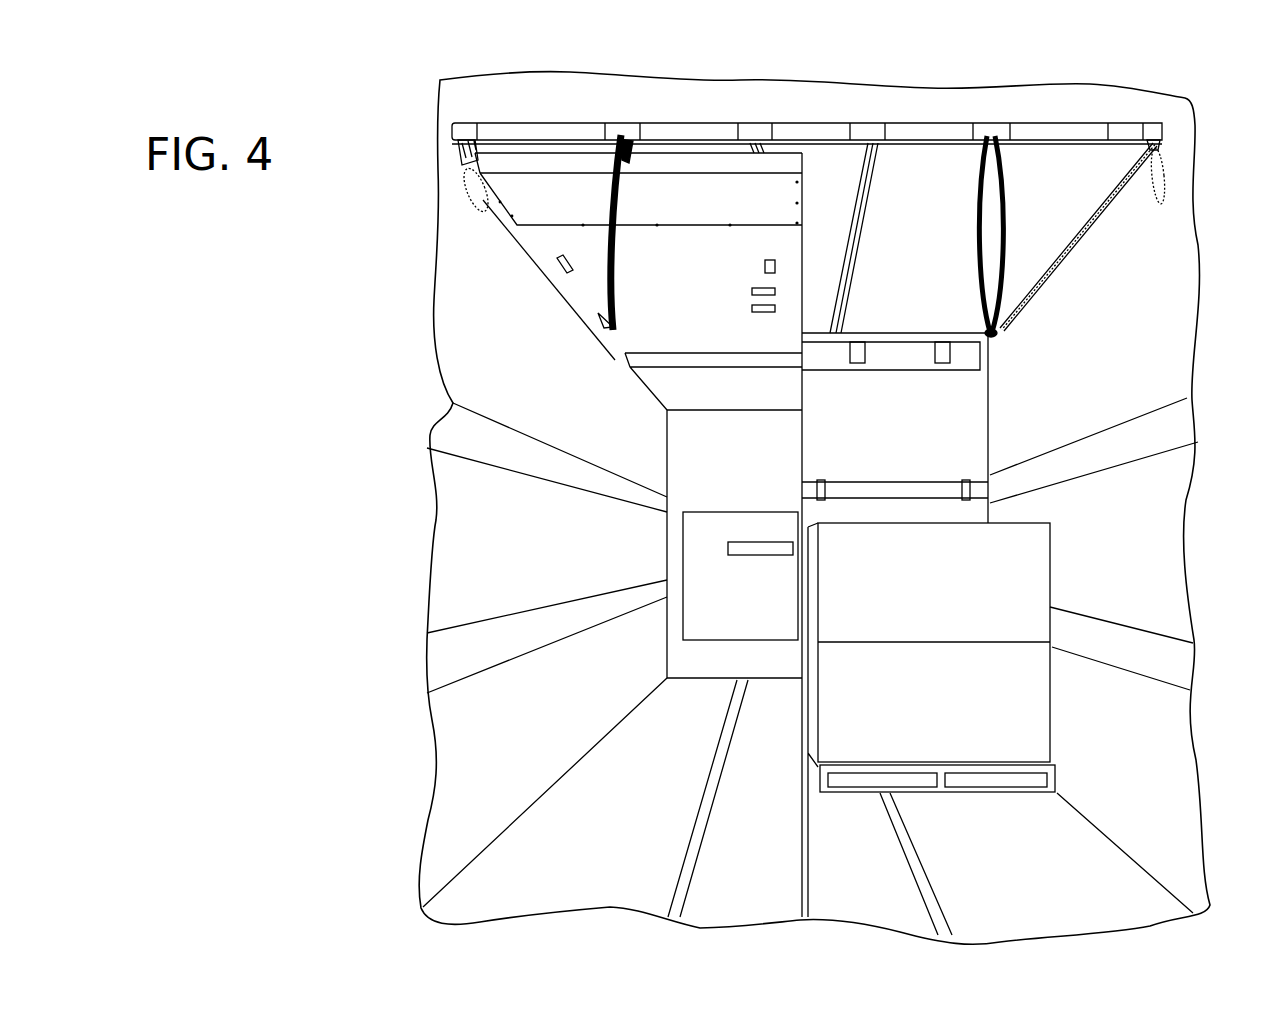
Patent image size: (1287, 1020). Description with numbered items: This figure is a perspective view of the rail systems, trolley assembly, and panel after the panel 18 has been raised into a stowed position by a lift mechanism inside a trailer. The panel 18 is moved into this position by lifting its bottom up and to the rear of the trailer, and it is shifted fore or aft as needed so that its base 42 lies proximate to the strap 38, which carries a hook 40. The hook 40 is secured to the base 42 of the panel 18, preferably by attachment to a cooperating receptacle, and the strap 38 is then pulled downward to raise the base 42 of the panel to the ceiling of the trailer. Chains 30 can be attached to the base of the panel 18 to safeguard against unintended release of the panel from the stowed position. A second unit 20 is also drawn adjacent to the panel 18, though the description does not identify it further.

The panel 18 is at (652, 320).
The second cabinet 20 is at (960, 402).
The chains 30 is at (470, 196).
The strap 38 is at (607, 208).
The hook 40 is at (630, 155).
The base 42 is at (700, 162).